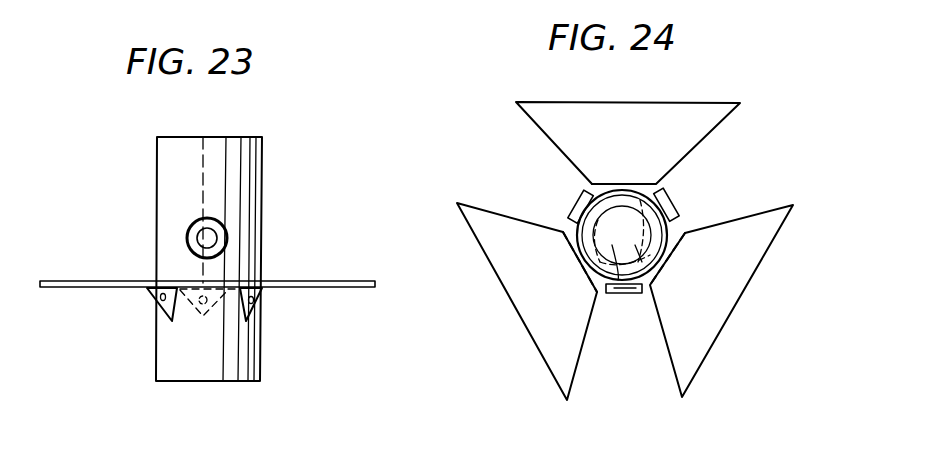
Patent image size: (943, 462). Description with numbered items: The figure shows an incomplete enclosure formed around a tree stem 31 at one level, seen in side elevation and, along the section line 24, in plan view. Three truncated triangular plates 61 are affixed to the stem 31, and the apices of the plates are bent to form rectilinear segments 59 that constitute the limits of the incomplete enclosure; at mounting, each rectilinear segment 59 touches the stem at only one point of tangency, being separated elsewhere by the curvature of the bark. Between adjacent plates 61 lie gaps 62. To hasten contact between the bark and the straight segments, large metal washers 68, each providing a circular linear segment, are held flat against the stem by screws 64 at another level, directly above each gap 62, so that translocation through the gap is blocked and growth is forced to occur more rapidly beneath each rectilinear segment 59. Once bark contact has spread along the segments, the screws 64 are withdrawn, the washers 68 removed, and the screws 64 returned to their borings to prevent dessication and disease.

In FIG. 23, the section line for FIG. 24 is at (20, 161).
In FIG. 23, the post 31 is at (250, 357).
In FIG. 24, the rectilinear segment 59 is at (686, 233).
In FIG. 23, the truncated triangular plate 61 is at (94, 281).
In FIG. 24, the truncated triangular plate 61 is at (644, 136).
In FIG. 24, the gap 62 is at (657, 183).
In FIG. 23, the screw 64 is at (157, 300).
In FIG. 23, the metal washer 68 is at (190, 226).
In FIG. 24, the metal washer 68 is at (583, 204).